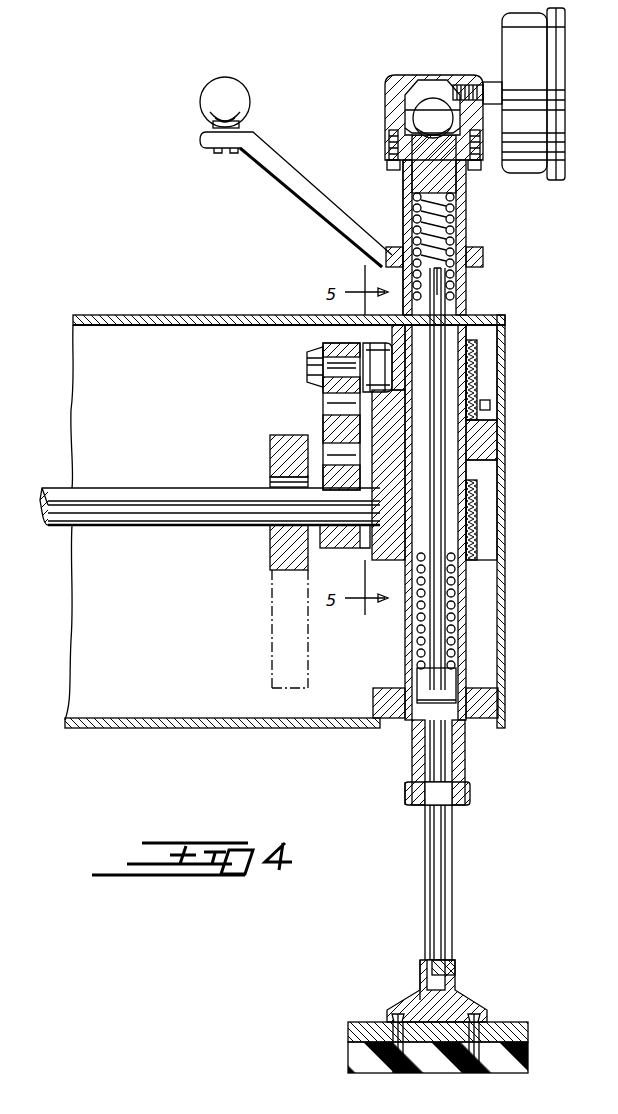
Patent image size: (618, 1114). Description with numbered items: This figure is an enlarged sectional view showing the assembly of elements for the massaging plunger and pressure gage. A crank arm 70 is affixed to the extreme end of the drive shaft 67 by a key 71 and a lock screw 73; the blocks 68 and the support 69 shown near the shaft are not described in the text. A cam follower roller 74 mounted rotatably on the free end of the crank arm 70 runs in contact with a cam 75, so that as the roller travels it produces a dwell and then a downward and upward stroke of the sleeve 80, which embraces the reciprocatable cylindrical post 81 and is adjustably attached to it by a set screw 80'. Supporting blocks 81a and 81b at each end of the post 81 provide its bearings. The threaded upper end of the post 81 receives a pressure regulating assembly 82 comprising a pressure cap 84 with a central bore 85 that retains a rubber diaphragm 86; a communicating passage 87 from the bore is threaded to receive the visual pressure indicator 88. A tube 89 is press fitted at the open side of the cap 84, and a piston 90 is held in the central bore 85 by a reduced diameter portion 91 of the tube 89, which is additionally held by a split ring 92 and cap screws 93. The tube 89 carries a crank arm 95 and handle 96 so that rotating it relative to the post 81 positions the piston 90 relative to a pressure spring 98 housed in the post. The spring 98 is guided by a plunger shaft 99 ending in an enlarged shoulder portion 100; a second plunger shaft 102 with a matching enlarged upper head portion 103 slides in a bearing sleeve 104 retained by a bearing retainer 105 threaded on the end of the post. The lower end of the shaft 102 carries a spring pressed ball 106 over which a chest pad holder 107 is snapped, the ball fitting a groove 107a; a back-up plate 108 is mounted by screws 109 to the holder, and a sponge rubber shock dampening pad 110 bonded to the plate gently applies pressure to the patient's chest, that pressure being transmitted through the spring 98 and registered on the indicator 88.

The drive shaft 67 is at (124, 492).
The bearing block 68 is at (278, 486).
The support 69 is at (272, 602).
The crank arm 70 is at (330, 428).
The key 71 is at (366, 552).
The lock screw 73 is at (338, 548).
The cam follower roller 74 is at (380, 355).
The cam 75 is at (372, 345).
The sleeve 80 is at (504, 520).
The set screw 80' is at (506, 430).
The cylindrical post 81 is at (467, 598).
The supporting block 81a is at (492, 446).
The supporting block 81b is at (492, 702).
The pressure regulating assembly 82 is at (478, 214).
The pressure cap 84 is at (388, 75).
The central bore 85 is at (423, 100).
The diaphragm 86 is at (410, 130).
The communicating passage 87 is at (458, 84).
The visual pressure indicator 88 is at (555, 100).
The tube 89 is at (403, 206).
The piston 90 is at (467, 186).
The reduced diameter portion 91 is at (436, 105).
The split ring 92 is at (389, 158).
The cap screws 93 is at (389, 168).
The crank arm 95 is at (270, 155).
The handle 96 is at (230, 92).
The pressure spring 98 is at (455, 282).
The plunger shaft 99 is at (432, 312).
The enlarged shoulder portion 100 is at (440, 680).
The second plunger shaft 102 is at (447, 888).
The enlarged upper head portion 103 is at (455, 735).
The bearing sleeve 104 is at (470, 790).
The bearing retainer 105 is at (405, 792).
The spring pressed ball 106 is at (458, 965).
The chest pad holder 107 is at (448, 1005).
The groove 107a is at (420, 968).
The back-up plate 108 is at (515, 1023).
The screws 109 is at (476, 1076).
The pressure pad 110 is at (530, 1055).